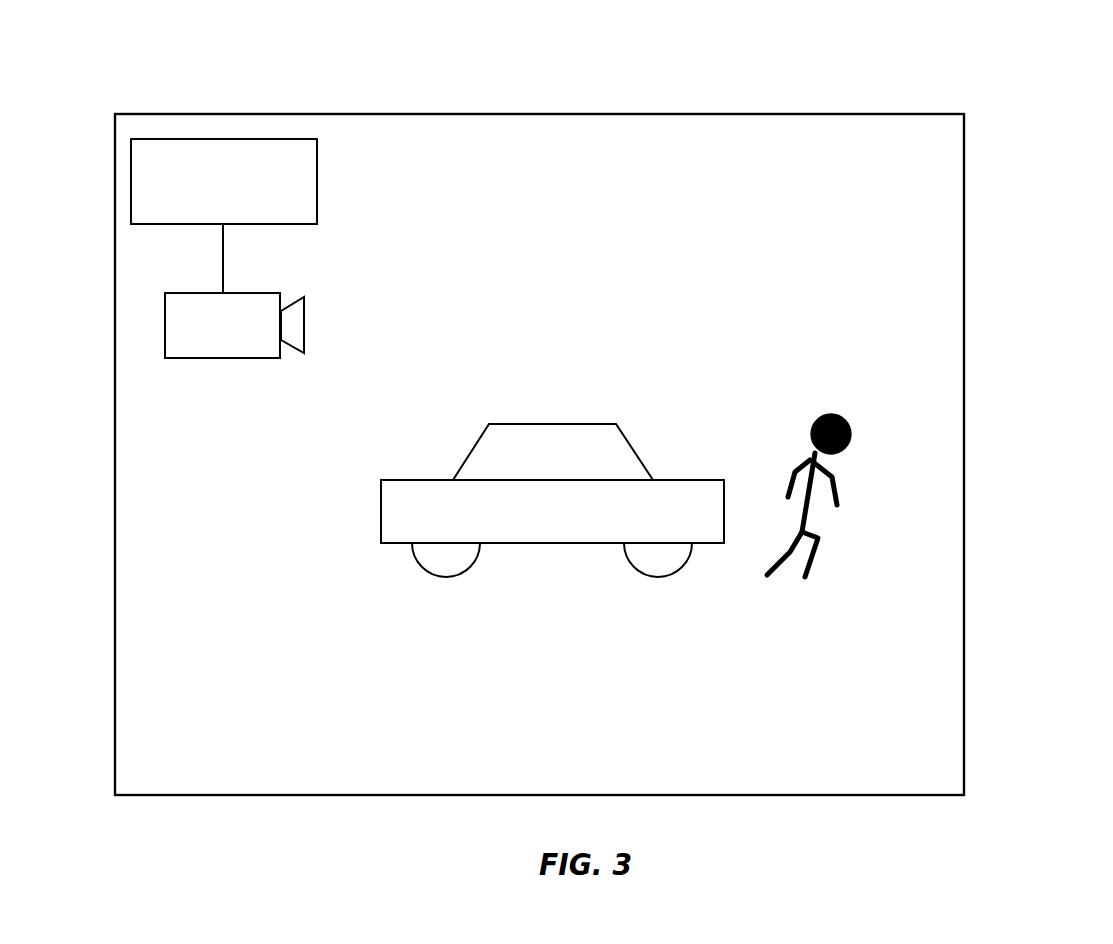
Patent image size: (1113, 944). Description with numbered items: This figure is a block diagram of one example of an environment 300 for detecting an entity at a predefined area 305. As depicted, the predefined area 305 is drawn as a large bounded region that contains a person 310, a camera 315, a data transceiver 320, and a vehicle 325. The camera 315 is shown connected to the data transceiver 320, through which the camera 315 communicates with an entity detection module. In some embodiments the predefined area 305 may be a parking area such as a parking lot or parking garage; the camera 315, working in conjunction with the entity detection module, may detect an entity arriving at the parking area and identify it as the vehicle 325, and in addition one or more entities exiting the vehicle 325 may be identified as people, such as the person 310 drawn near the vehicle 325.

The environment 300 is at (1019, 101).
The predefined area 305 is at (115, 137).
The person 310 is at (843, 415).
The camera 315 is at (207, 359).
The data transceiver 320 is at (224, 216).
The vehicle 325 is at (476, 443).